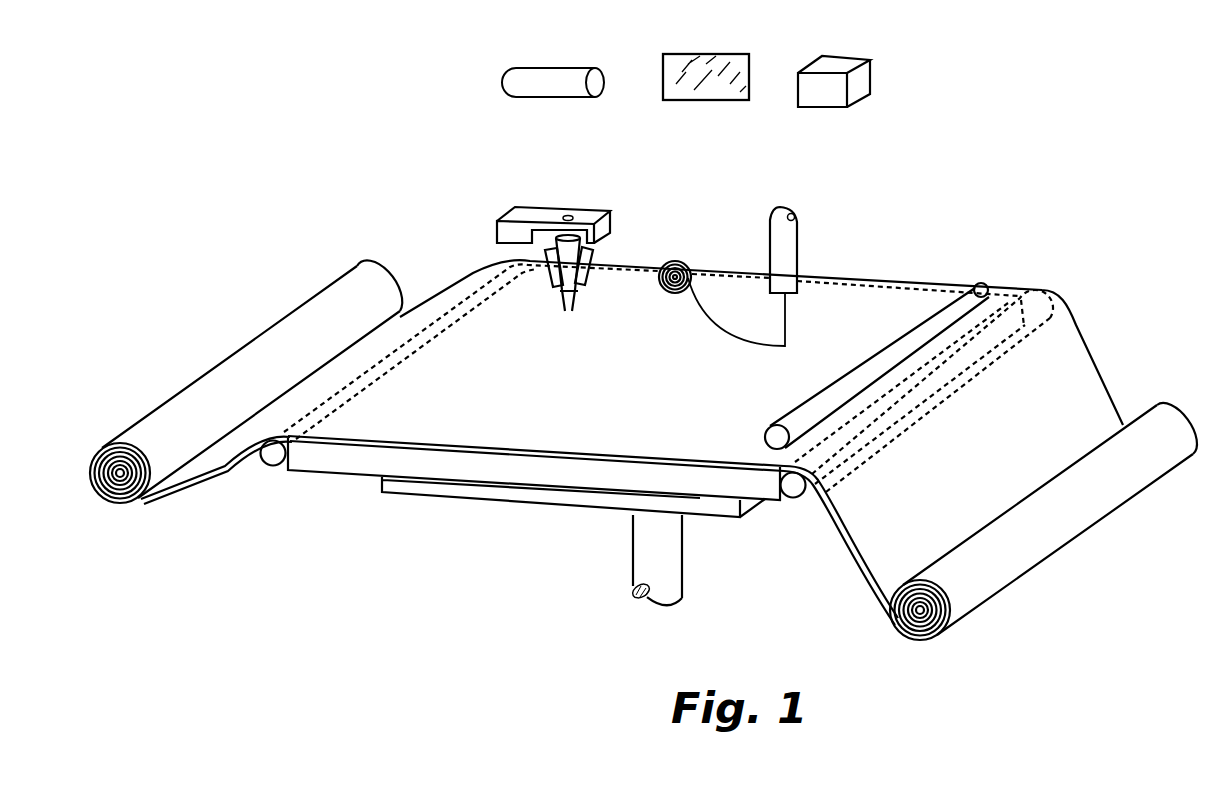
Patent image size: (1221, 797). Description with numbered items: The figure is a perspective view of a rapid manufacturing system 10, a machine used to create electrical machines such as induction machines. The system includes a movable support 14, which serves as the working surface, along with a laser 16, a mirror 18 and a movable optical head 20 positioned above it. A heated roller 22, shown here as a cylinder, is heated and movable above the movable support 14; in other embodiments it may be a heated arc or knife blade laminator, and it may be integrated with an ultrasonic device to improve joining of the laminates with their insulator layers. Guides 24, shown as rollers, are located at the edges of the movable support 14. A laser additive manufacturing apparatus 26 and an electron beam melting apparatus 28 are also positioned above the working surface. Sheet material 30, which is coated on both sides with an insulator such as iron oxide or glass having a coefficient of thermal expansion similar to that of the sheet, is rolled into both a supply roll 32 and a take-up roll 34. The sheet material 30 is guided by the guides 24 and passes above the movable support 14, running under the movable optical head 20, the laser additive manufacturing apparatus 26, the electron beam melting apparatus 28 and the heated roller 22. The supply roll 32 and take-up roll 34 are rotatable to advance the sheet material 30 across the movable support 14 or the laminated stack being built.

The rapid manufacturing system 10 is at (1099, 258).
The movable support 14 is at (433, 489).
The laser 16 is at (543, 72).
The mirror 18 is at (718, 58).
The movable optical head 20 is at (838, 62).
The heated roller 22 is at (930, 325).
The guides 24 is at (270, 456).
The laser additive manufacturing apparatus 26 is at (540, 215).
The electron beam melting apparatus 28 is at (768, 232).
The sheet material 30 is at (537, 385).
The supply roll 32 is at (162, 424).
The take-up roll 34 is at (950, 580).